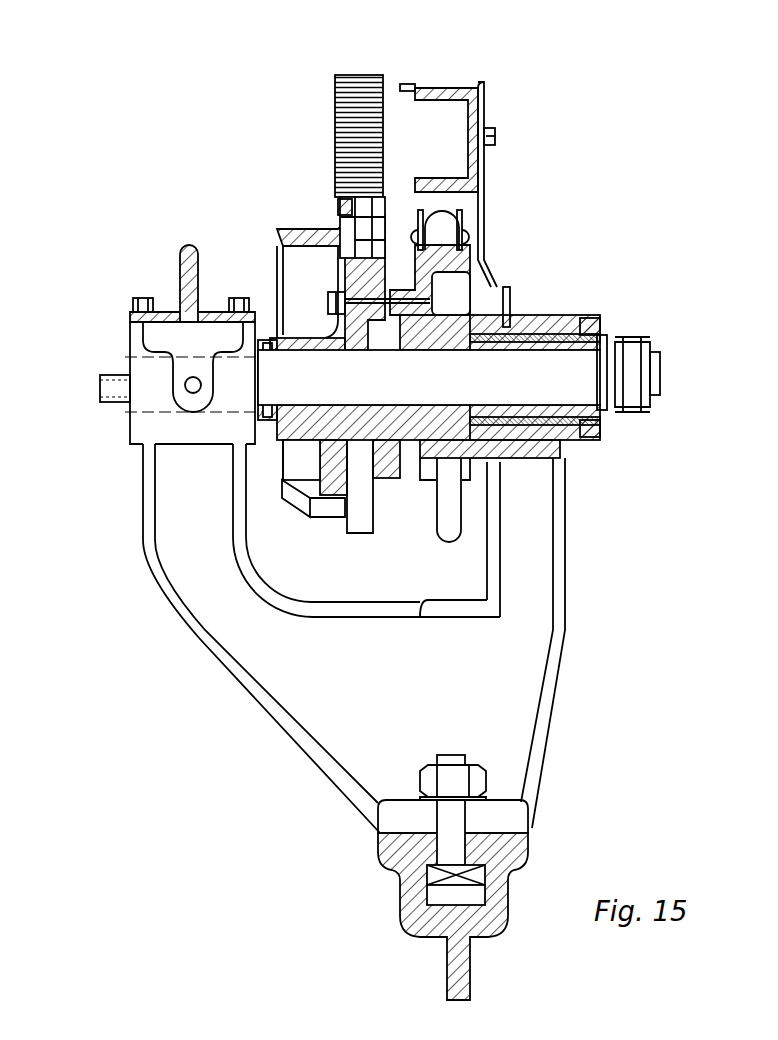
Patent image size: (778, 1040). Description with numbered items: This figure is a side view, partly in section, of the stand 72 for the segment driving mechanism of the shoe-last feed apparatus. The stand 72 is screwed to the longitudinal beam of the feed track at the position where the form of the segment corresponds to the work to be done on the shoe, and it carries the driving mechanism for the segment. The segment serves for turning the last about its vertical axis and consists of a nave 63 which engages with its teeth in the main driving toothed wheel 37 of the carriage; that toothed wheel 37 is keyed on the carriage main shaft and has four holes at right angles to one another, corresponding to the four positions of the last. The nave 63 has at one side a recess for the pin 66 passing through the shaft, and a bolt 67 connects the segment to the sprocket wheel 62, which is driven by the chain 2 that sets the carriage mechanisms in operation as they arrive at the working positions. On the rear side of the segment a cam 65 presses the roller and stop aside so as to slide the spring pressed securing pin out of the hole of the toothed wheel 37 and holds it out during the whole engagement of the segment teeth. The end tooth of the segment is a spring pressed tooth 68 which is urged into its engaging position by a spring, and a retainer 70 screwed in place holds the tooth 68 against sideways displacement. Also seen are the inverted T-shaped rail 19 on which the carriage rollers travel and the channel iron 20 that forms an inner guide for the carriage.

The chain 2 is at (462, 216).
The rail 19 is at (188, 248).
The channel iron 20 is at (481, 86).
The main driving toothed wheel 37 is at (371, 77).
The sprocket wheel 62 is at (460, 260).
The segment nave 63 is at (350, 420).
The cam 65 is at (308, 503).
The pin 66 is at (268, 424).
The bolt 67 is at (406, 302).
The spring pressed tooth 68 is at (340, 214).
The retainer 70 is at (360, 240).
The stand 72 is at (559, 575).